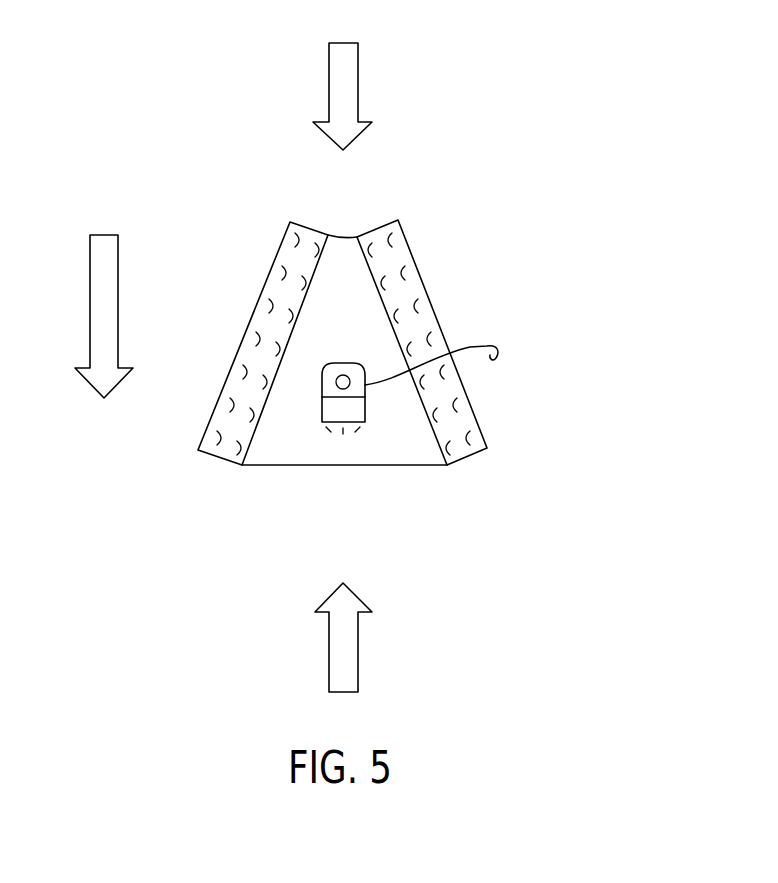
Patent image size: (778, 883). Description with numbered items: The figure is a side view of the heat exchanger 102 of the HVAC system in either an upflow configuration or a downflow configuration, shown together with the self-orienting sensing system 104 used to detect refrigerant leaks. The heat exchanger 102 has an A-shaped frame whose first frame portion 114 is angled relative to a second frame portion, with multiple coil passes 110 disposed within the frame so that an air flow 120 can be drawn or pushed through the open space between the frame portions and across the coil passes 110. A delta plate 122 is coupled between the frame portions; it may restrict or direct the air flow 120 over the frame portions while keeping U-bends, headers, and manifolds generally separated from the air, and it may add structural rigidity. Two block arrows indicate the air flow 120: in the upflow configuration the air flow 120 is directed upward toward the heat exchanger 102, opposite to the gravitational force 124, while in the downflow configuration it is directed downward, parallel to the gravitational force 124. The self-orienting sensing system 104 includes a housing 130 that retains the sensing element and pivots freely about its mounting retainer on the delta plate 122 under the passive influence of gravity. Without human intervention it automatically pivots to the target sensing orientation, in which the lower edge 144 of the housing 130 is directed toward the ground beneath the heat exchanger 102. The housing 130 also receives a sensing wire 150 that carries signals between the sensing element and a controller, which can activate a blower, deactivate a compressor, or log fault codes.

The heat exchanger 102 is at (343, 361).
The self-orienting sensing system 104 is at (344, 384).
The coil passes 110 is at (473, 463).
The first frame portion 114 is at (212, 462).
The air flow 120 is at (358, 82).
The delta plate 122 is at (283, 440).
The gravitational force 124 is at (90, 292).
The housing 130 is at (322, 360).
The lower edge 144 is at (365, 425).
The sensing wire 150 is at (472, 343).